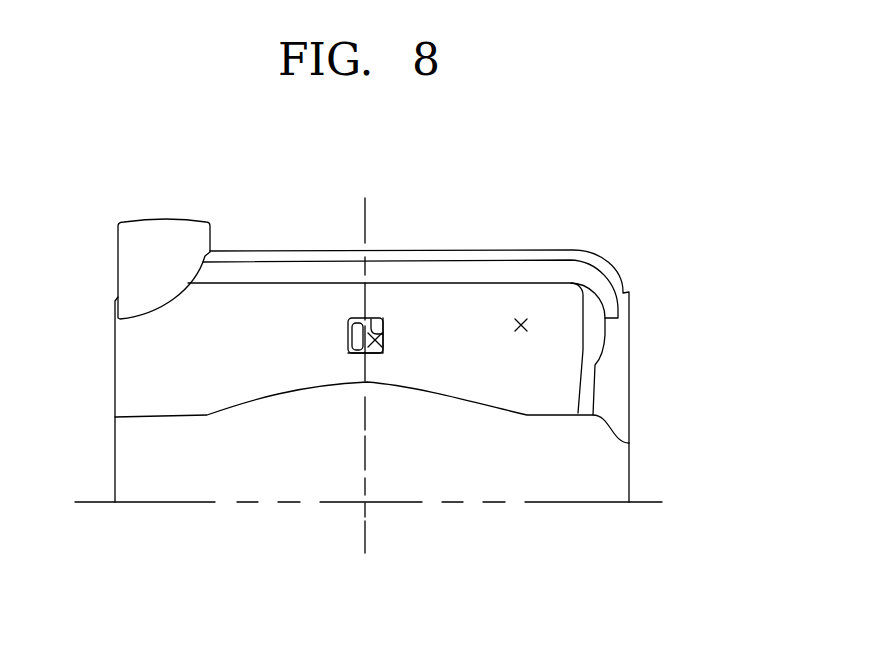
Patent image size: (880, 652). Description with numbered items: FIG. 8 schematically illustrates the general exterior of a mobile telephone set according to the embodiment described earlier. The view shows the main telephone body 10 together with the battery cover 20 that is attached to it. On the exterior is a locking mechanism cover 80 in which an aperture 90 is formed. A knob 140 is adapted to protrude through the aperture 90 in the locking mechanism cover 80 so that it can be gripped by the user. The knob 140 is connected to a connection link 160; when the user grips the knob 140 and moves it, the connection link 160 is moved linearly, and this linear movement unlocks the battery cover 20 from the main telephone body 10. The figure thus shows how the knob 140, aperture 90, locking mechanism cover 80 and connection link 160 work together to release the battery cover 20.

The main telephone body 10 is at (96, 351).
The battery cover 20 is at (132, 457).
The locking mechanism cover 80 is at (522, 320).
The aperture 90 is at (372, 320).
The knob 140 is at (350, 320).
The connection link 160 is at (383, 353).